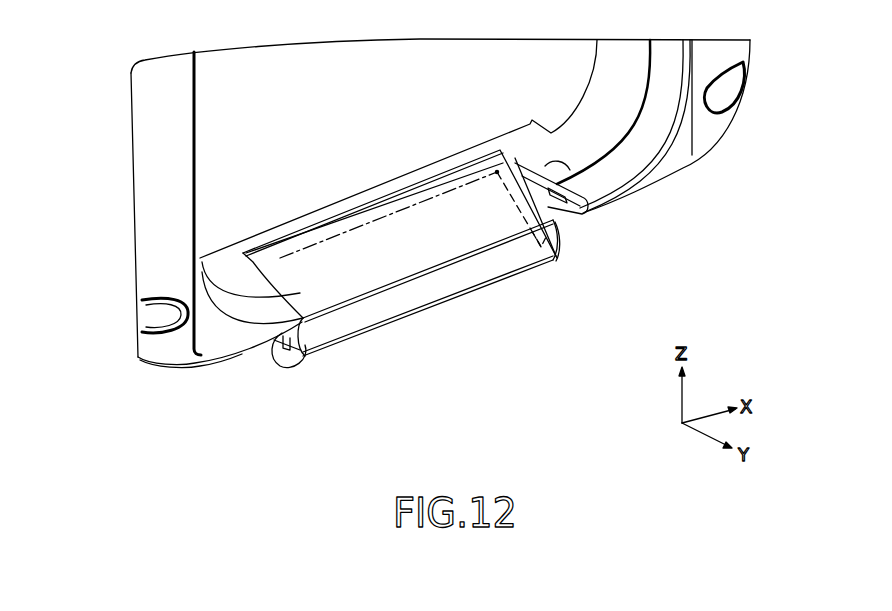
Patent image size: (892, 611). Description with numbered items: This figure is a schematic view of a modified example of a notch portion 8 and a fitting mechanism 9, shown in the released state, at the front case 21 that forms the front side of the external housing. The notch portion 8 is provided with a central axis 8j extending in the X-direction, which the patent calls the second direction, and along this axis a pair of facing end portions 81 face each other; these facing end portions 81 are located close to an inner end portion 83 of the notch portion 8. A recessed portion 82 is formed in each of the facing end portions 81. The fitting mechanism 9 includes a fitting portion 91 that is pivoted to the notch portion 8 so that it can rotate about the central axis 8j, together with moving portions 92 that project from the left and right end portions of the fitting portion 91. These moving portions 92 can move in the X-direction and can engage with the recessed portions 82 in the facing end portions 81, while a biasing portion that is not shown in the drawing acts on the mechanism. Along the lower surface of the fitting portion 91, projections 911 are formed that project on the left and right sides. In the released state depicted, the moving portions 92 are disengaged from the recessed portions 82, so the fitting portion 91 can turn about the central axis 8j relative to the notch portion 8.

The front case 21 is at (672, 152).
The notch portion 8 is at (527, 163).
The facing end portions 81 is at (267, 260).
The recessed portion 82 is at (567, 250).
The inner end portion 83 is at (440, 183).
The central axis 8j is at (370, 197).
The fitting mechanism 9 is at (429, 324).
The fitting portion 91 is at (472, 273).
The moving portions 92 is at (312, 360).
The projections 911 is at (272, 362).